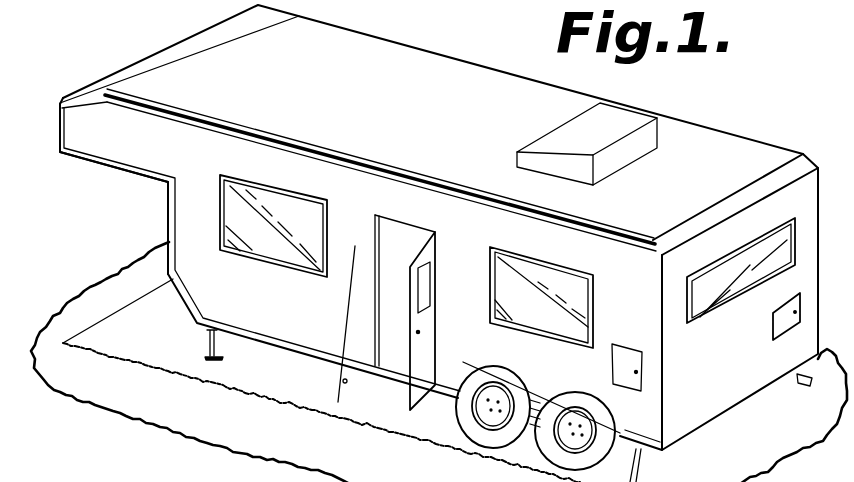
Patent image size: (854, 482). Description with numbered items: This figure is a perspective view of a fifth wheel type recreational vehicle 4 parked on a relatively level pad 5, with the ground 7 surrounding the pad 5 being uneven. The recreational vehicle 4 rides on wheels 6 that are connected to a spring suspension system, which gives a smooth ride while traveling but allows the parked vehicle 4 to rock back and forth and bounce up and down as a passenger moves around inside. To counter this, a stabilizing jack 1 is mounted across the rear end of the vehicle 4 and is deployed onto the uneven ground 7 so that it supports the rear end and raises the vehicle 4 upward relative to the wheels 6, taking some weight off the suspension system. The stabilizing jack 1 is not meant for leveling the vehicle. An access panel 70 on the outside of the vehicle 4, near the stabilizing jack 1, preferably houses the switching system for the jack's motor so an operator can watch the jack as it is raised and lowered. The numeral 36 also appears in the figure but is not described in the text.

The stabilizing jack 1 is at (644, 471).
The recreational vehicle 4 is at (168, 232).
The pad 5 is at (98, 331).
The wheels 6 is at (458, 424).
The ground 7 is at (102, 389).
The landing jack 36 is at (224, 480).
The access panel 70 is at (773, 336).